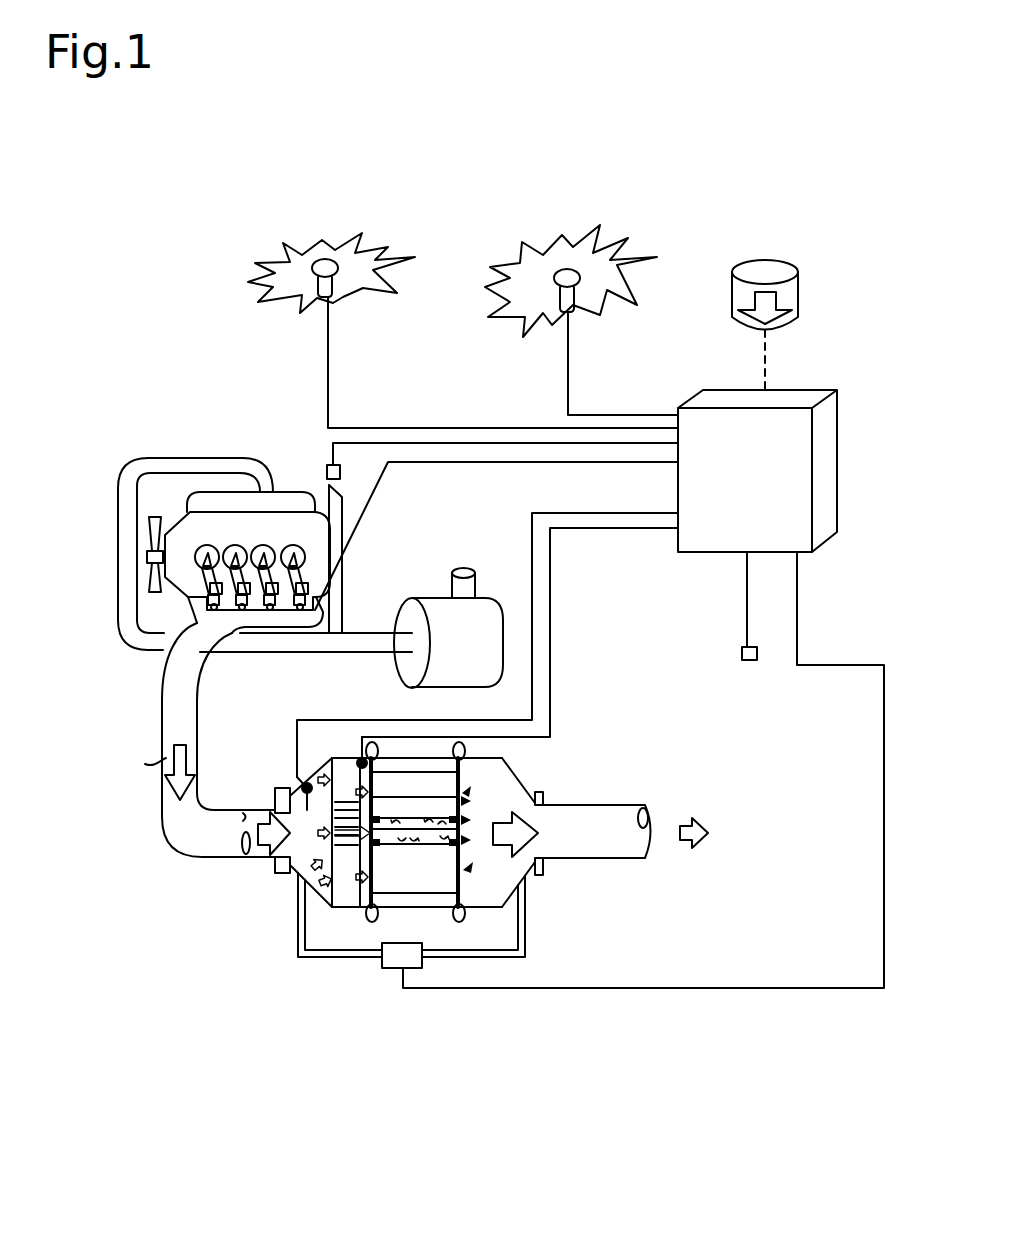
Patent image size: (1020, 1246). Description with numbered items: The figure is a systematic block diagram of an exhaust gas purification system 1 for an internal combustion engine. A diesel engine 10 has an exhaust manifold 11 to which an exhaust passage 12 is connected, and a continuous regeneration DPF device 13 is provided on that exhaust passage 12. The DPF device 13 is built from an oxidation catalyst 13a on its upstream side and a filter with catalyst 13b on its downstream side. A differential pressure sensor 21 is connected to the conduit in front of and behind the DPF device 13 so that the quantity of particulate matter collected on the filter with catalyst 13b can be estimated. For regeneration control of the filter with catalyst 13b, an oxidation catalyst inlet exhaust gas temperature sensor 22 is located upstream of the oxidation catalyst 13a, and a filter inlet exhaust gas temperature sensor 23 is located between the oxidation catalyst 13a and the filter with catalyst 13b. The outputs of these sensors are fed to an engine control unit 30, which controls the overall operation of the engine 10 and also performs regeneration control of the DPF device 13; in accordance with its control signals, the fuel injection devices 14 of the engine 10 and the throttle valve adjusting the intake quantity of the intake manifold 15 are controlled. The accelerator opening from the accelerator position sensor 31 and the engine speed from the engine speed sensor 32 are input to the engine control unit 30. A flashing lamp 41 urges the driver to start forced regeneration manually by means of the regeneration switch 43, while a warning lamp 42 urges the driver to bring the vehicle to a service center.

The exhaust gas purification system 1 is at (694, 287).
The diesel engine 10 is at (180, 517).
The exhaust manifold 11 is at (195, 612).
The exhaust passage 12 is at (192, 840).
The continuous regeneration DPF device 13 is at (517, 782).
The oxidation catalyst 13a is at (343, 878).
The filter with catalyst 13b is at (427, 875).
The fuel injection devices 14 is at (207, 578).
The intake manifold 15 is at (283, 502).
The differential pressure sensor 21 is at (398, 960).
The oxidation catalyst inlet exhaust gas temperature sensor 22 is at (307, 788).
The filter inlet exhaust gas temperature sensor 23 is at (362, 763).
The engine control unit 30 is at (832, 462).
The accelerator position sensor 31 is at (746, 660).
The engine speed sensor 32 is at (325, 466).
The flashing lamp 41 is at (327, 262).
The warning lamp 42 is at (567, 272).
The regeneration switch 43 is at (782, 267).